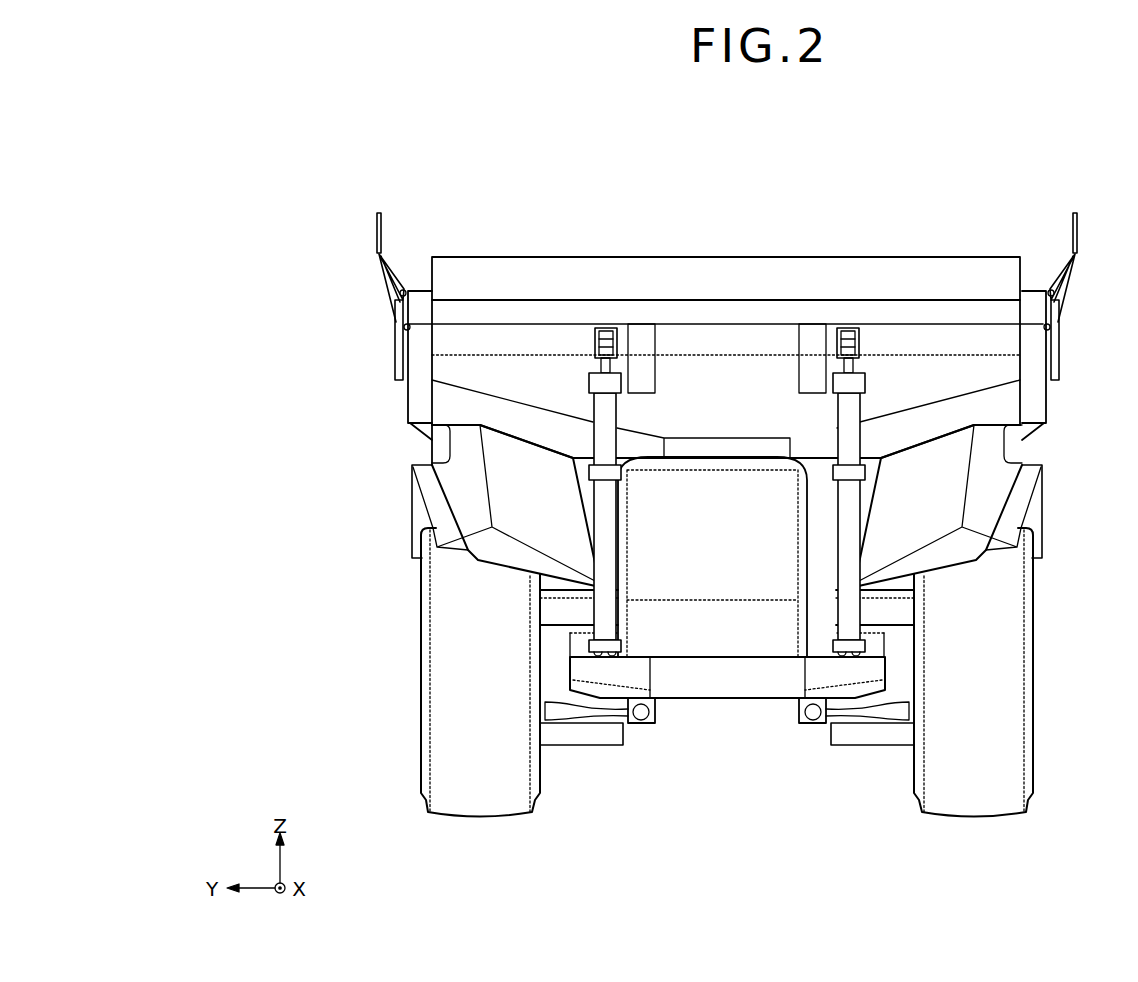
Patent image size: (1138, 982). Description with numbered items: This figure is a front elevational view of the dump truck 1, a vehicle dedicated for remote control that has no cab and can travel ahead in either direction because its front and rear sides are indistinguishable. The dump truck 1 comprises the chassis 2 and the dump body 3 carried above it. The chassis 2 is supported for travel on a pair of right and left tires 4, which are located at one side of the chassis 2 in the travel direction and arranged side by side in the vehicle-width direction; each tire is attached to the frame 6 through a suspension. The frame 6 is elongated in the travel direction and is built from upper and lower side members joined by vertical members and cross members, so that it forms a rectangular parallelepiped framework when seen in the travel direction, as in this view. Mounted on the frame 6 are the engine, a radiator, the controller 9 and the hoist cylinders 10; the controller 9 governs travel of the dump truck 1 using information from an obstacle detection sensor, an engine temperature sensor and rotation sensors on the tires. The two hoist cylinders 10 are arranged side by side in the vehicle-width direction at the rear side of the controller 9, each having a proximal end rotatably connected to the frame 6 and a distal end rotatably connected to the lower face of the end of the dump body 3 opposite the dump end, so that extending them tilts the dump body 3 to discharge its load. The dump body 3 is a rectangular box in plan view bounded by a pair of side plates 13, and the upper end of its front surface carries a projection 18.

The dump truck 1 is at (938, 198).
The chassis 2 is at (778, 714).
The dump body 3 is at (838, 272).
The tires 4 is at (440, 670).
The frame 6 is at (748, 685).
The controller 9 is at (702, 615).
The hoist cylinder 10 is at (595, 406).
The side plates 13 is at (418, 403).
The projection 18 is at (515, 275).